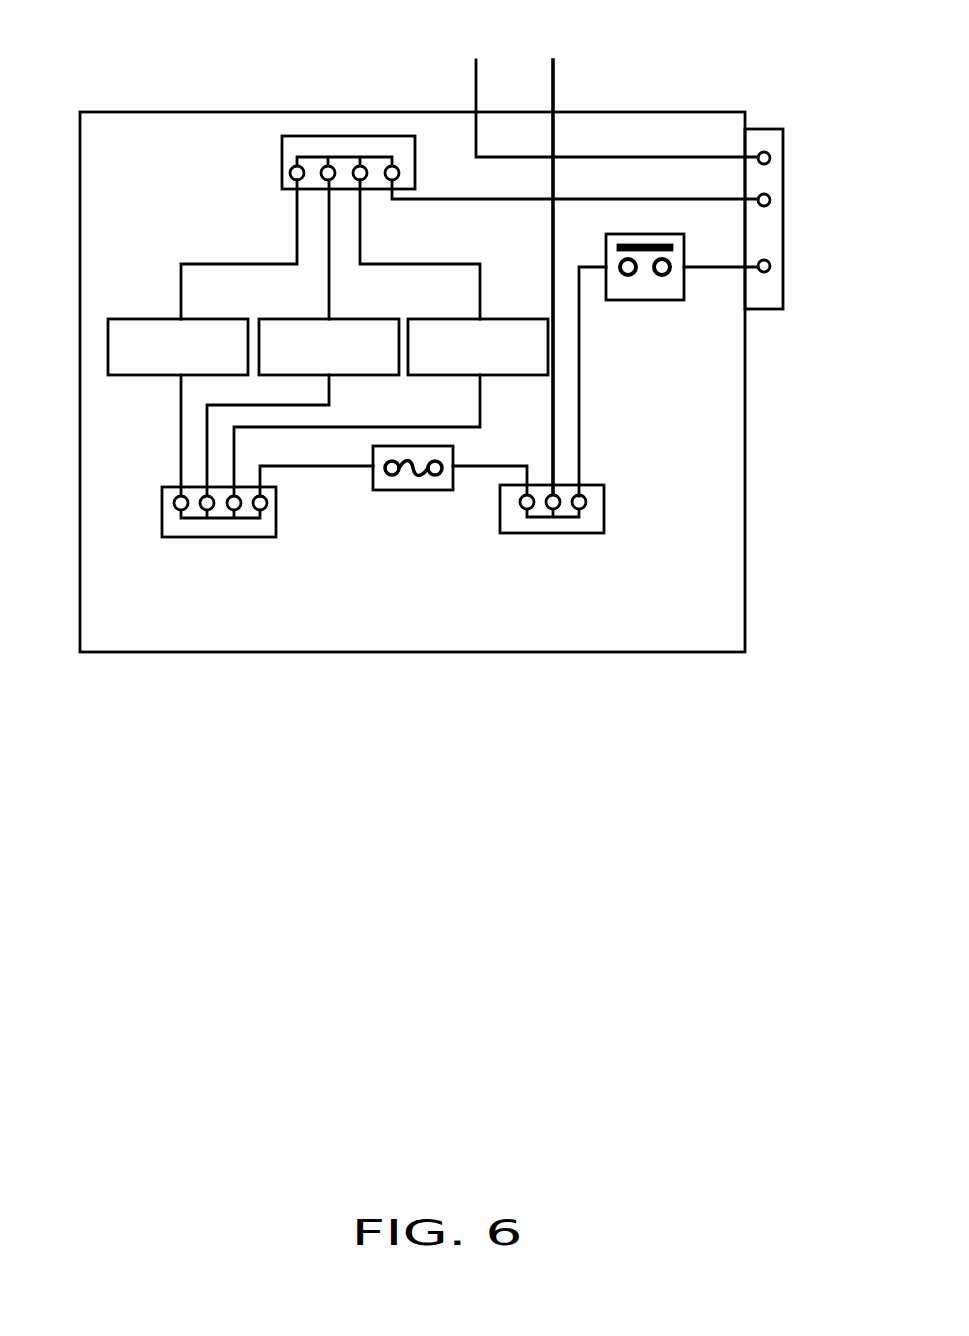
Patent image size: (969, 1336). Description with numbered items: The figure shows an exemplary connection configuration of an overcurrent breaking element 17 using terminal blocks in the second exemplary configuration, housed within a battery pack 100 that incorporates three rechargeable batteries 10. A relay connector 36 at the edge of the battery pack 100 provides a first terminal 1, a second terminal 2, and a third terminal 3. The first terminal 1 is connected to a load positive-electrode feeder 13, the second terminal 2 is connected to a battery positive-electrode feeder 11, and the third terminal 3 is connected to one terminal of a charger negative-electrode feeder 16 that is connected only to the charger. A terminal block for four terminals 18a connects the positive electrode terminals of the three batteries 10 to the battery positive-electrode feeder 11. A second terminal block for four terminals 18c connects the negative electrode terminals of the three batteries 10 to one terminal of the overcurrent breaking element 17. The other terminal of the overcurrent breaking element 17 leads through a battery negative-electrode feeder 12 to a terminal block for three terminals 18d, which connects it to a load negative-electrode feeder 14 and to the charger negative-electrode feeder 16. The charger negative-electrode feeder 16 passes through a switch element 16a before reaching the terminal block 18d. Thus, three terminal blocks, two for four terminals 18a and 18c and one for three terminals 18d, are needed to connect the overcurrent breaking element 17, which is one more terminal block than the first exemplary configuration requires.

The battery pack 100 is at (418, 652).
The relay connector 36 is at (765, 129).
The first terminal 1 is at (786, 159).
The second terminal 2 is at (786, 201).
The third terminal 3 is at (786, 267).
The load positive-electrode feeder 13 is at (475, 72).
The load negative-electrode feeder 14 is at (556, 100).
The battery positive-electrode feeder 11 is at (460, 199).
The terminal block for four terminals 18a is at (282, 164).
The battery 10 is at (165, 318).
The terminal block for four terminals 18c is at (262, 537).
The overcurrent breaking element 17 is at (413, 490).
The battery negative-electrode feeder 12 is at (478, 463).
The terminal block for three terminals 18d is at (604, 507).
The charger negative-electrode feeder 16 is at (668, 365).
The switch element 16a is at (650, 300).